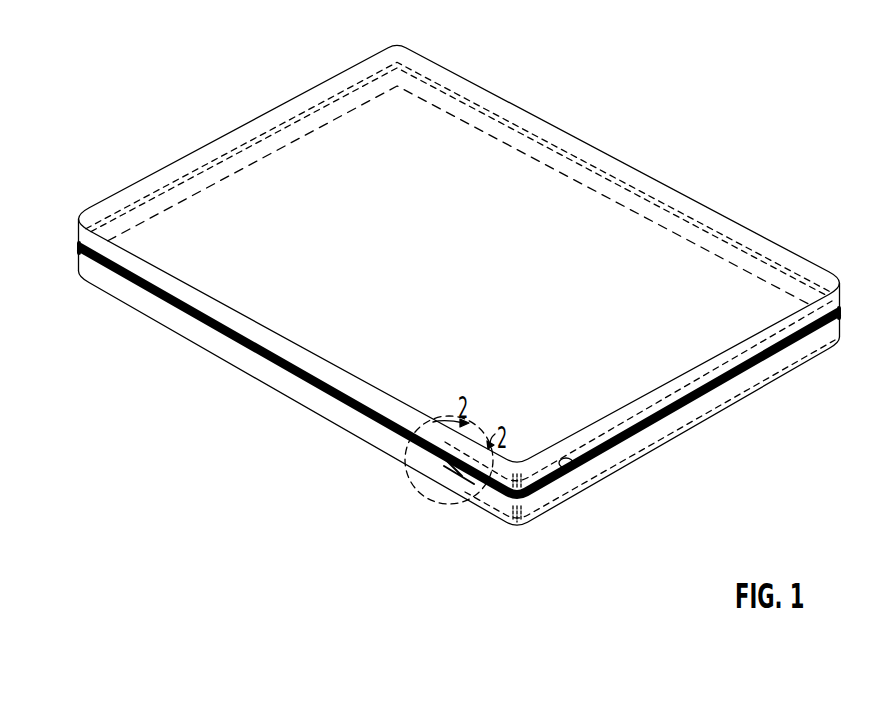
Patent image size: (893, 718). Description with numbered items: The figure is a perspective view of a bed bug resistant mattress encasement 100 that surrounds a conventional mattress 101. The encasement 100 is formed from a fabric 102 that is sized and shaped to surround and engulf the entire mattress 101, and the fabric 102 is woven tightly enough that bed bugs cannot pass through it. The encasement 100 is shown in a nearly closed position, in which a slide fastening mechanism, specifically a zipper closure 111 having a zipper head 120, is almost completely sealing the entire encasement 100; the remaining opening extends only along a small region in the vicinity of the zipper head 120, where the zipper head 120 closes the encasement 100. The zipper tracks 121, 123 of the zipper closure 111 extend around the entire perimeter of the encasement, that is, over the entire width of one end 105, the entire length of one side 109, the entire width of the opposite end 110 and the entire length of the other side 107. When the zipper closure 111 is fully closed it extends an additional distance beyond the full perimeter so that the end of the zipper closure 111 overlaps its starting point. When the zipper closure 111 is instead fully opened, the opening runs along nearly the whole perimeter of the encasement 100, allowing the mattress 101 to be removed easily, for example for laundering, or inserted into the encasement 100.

The mattress encasement 100 is at (148, 430).
The mattress 101 is at (490, 515).
The fabric 102 is at (288, 388).
The end 105 is at (722, 366).
The side 107 is at (390, 432).
The side 109 is at (678, 210).
The end 110 is at (291, 100).
The zipper closure 111 is at (778, 353).
The zipper head 120 is at (418, 490).
The zipper track 121 is at (580, 465).
The zipper track 123 is at (549, 486).